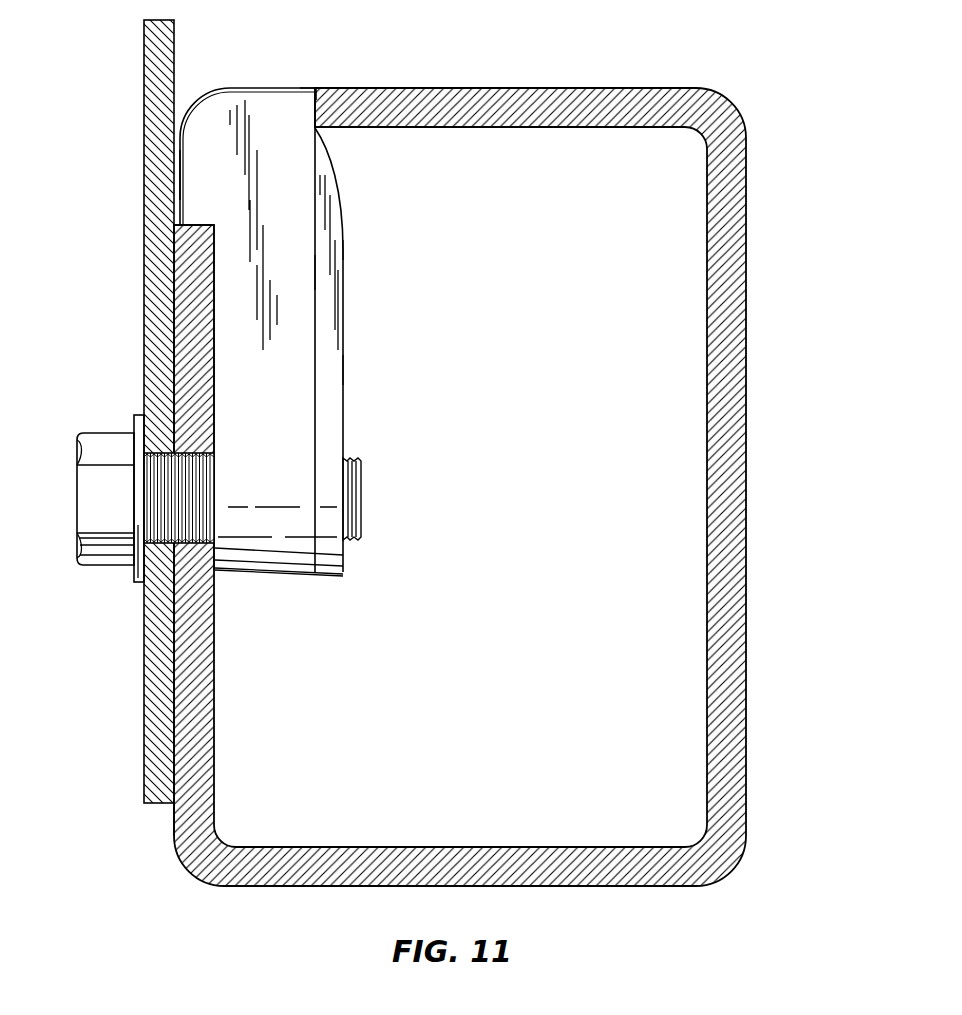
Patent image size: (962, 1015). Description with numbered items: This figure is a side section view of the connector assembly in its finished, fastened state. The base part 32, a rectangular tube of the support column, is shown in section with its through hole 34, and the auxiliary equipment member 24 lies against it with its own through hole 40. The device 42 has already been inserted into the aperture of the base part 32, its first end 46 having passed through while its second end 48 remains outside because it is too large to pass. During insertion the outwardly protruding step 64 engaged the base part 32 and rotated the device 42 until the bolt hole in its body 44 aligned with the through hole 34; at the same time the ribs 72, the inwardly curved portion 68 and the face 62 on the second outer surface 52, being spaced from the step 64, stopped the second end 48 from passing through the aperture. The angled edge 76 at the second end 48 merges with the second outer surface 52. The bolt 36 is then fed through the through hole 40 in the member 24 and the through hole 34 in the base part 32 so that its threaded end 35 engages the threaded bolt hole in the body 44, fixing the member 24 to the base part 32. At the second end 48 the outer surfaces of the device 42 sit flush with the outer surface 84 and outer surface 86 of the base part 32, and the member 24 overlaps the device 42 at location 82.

The auxiliary equipment member 24 is at (175, 57).
The base part 32 is at (706, 88).
The through hole 34 is at (197, 548).
The threaded end 35 is at (362, 488).
The bolt 36 is at (100, 558).
The through hole 40 is at (162, 447).
The device 42 is at (280, 411).
The body 44 is at (296, 270).
The first end 46 is at (278, 585).
The second end 48 is at (250, 80).
The second outer surface 52 is at (362, 242).
The face 62 is at (317, 110).
The outwardly protruding step 64 is at (190, 228).
The inwardly curved portion 68 is at (338, 178).
The ribs 72 is at (330, 368).
The angled edge 76 is at (316, 88).
The location 82 is at (180, 168).
The outer surface 84 is at (500, 88).
The outer surface 86 is at (173, 770).